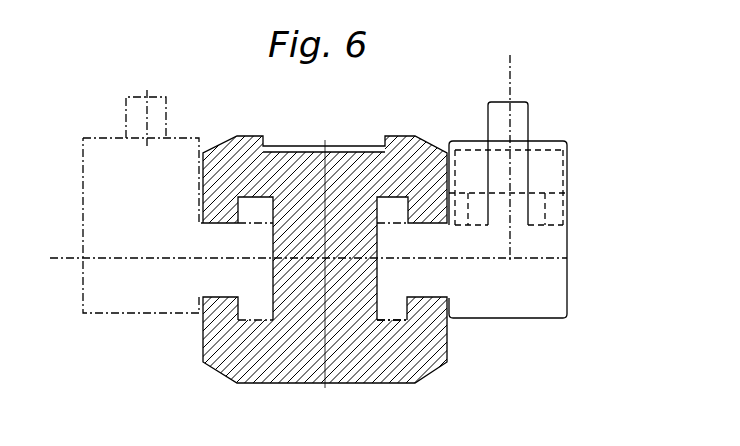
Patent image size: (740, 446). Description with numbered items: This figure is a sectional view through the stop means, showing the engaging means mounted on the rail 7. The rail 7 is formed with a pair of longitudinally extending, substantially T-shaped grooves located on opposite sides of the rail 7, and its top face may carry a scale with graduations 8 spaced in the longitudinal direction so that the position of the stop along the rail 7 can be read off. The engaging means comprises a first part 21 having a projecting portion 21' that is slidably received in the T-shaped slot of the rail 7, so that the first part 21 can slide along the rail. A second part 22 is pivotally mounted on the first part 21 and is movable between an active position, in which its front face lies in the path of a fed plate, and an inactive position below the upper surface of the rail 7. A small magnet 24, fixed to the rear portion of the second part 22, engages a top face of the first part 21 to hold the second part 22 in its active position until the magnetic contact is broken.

The rail 7 is at (375, 368).
The graduations 8 is at (332, 153).
The first part 21 is at (508, 258).
The projecting portion 21' is at (395, 295).
The second part 22 is at (527, 123).
The magnet 24 is at (538, 212).